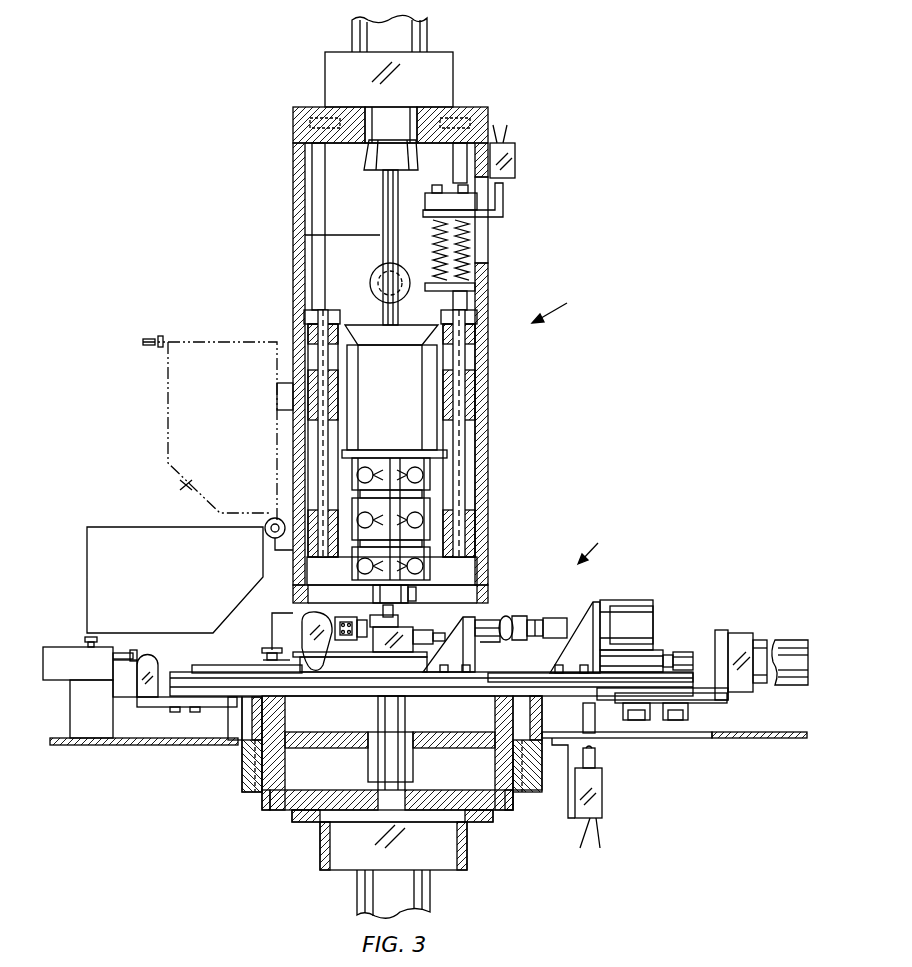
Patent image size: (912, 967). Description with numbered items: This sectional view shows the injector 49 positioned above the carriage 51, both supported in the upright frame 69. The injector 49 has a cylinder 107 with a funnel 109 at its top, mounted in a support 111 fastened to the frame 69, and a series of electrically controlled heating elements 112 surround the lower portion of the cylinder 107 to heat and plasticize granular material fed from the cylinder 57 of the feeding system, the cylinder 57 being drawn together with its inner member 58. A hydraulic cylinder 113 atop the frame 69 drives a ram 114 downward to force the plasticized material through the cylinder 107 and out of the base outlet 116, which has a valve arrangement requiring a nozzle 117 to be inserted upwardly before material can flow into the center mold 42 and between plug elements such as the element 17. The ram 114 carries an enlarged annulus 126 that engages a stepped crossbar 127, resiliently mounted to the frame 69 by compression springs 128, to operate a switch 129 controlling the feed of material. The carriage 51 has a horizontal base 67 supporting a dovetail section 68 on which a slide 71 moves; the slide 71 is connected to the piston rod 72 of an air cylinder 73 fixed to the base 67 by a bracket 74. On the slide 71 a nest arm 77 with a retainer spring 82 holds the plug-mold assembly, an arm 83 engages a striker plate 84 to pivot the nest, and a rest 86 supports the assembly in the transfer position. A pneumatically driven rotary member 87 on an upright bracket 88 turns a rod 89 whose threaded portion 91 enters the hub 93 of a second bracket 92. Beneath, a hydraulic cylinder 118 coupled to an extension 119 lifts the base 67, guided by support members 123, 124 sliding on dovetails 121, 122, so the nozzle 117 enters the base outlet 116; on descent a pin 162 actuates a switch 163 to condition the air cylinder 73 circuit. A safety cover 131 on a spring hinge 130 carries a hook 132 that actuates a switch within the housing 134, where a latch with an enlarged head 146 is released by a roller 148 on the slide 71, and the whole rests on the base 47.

The hydraulic cylinder 113 is at (428, 40).
The enlarged annulus 126 is at (364, 156).
The ram 114 is at (383, 205).
The switch 129 is at (515, 163).
The stepped crossbar 127 is at (503, 213).
The compression springs 128 is at (470, 237).
The cylinder 57 is at (376, 268).
The pulley hub 58 is at (378, 283).
The upright frame 69 is at (488, 283).
The funnel 109 is at (362, 324).
The injector 49 is at (560, 306).
The support 111 is at (465, 425).
The heating elements 112 is at (384, 462).
The cylinder 107 is at (430, 492).
The safety cover 131 is at (165, 530).
The spring hinge 130 is at (272, 518).
The carriage 51 is at (598, 545).
The upright bracket 88 is at (596, 602).
The pneumatically driven rotary member 87 is at (628, 600).
The second bracket 92 is at (475, 620).
The threaded portion 91 is at (534, 620).
The rod 89 is at (553, 618).
The piston rod 72 is at (680, 650).
The bracket 74 is at (722, 630).
The air cylinder 73 is at (740, 634).
The pivotally mounted arm 77 is at (340, 617).
The retainer spring 82 is at (352, 622).
The center mold 42 is at (390, 594).
The base outlet 116 is at (416, 594).
The nozzle 117 is at (393, 612).
The arm 83 is at (300, 620).
The roller 148 is at (268, 647).
The plug element 17 is at (445, 637).
The rest 86 is at (405, 653).
The hub 93 is at (495, 640).
The slide 71 is at (355, 690).
The dovetail section 68 is at (235, 665).
The extension 119 is at (405, 708).
The hydraulic cylinder 118 is at (432, 888).
The support member 123 is at (244, 750).
The dovetail 121 is at (262, 795).
The horizontal base 67 is at (235, 712).
The support member 124 is at (530, 790).
The dovetail 122 is at (513, 798).
The base floor 47 is at (735, 731).
The pin 162 is at (583, 716).
The switch 163 is at (602, 770).
The projecting hook 132 is at (88, 640).
The housing 134 is at (113, 720).
The enlarged head 146 is at (128, 652).
The striker plate 84 is at (156, 662).